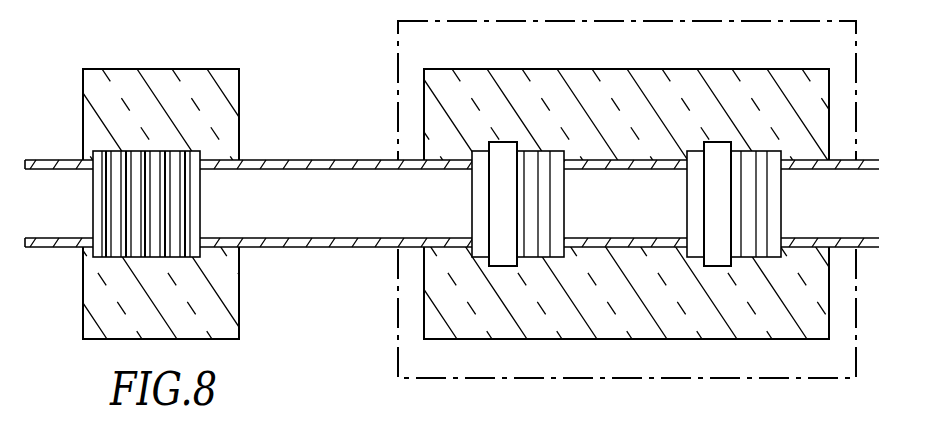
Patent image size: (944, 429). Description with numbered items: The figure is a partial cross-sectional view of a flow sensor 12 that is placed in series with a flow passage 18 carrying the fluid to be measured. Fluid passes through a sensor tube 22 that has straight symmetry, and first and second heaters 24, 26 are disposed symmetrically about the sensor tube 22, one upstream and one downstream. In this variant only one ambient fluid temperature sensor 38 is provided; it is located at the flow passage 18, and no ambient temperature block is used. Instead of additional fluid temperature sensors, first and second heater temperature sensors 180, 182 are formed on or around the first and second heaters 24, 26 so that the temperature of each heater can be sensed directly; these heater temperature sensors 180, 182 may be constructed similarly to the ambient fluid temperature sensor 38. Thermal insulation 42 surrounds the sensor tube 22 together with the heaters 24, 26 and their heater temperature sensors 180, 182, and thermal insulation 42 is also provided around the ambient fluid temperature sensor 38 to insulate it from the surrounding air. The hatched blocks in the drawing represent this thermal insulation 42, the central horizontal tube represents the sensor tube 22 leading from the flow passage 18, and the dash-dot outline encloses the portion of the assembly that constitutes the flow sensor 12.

The flow sensor 12 is at (398, 355).
The flow passage 18 is at (39, 248).
The sensor tube 22 is at (315, 248).
The first heater 24 is at (560, 218).
The second heater 26 is at (776, 203).
The ambient fluid temperature sensor 38 is at (193, 199).
The thermal insulation 42 is at (175, 72).
The first heater temperature sensor 180 is at (495, 199).
The second heater temperature sensor 182 is at (711, 199).